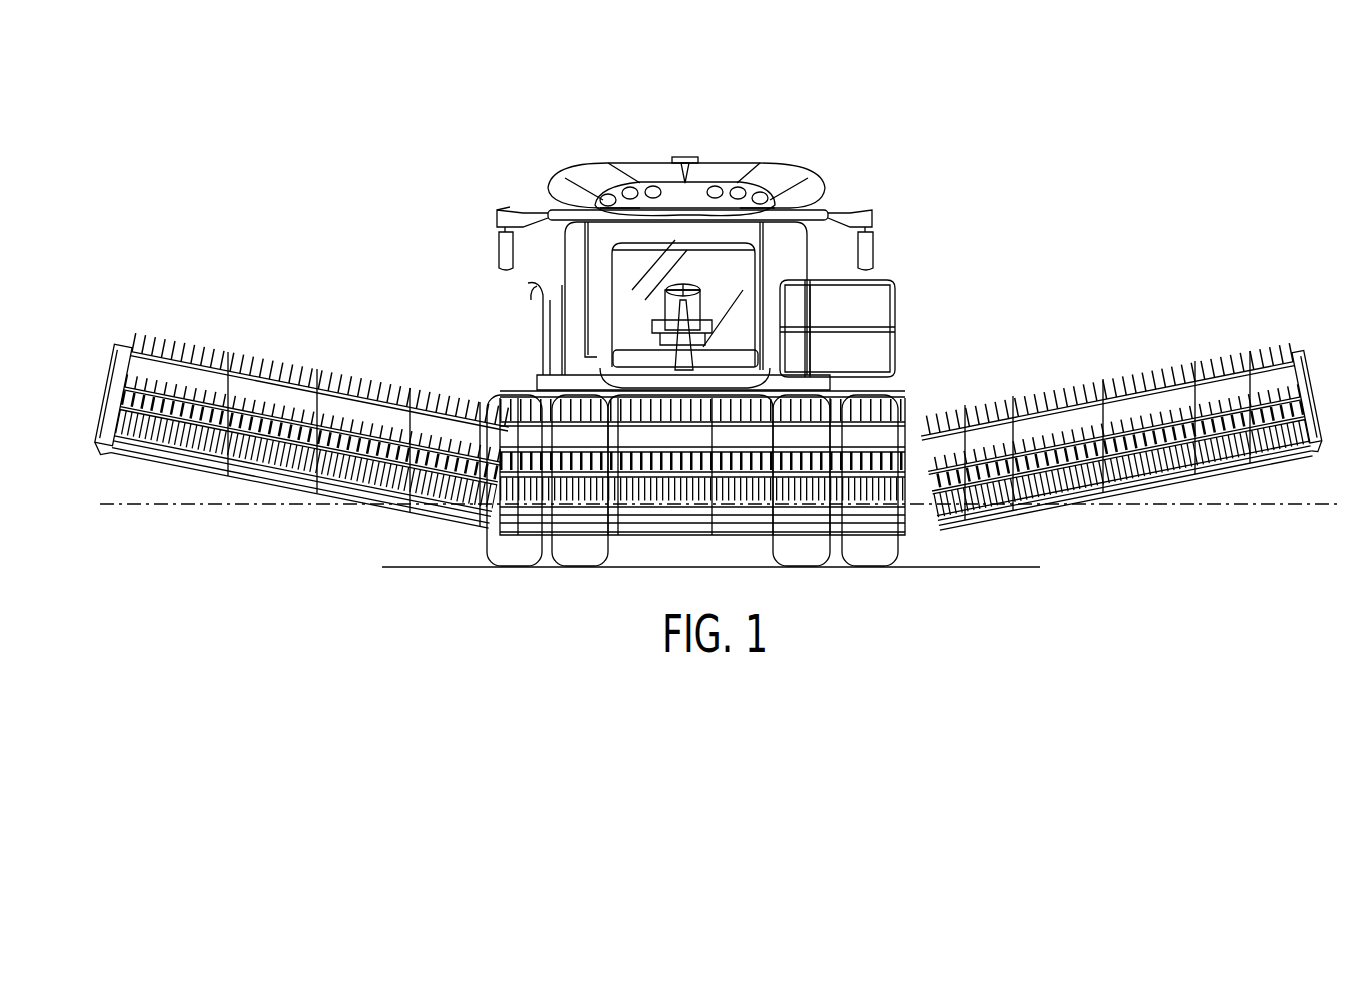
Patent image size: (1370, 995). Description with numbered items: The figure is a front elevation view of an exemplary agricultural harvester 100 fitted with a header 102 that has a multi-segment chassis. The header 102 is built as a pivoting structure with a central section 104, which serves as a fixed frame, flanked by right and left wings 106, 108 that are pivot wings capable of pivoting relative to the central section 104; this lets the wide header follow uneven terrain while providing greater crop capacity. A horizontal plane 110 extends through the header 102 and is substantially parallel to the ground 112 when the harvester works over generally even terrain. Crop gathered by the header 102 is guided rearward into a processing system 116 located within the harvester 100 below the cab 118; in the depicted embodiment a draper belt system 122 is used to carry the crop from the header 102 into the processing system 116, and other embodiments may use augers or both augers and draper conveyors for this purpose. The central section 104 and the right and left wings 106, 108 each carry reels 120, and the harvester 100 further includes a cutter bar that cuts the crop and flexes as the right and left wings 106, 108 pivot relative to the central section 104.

The harvester 100 is at (1040, 78).
The header 102 is at (995, 370).
The central section 104 is at (826, 378).
The right wing 106 is at (332, 292).
The left wing 108 is at (1184, 284).
The horizontal plane 110 is at (1288, 500).
The ground 112 is at (1000, 567).
The processing system 116 is at (540, 388).
The cab 118 is at (568, 247).
The reels 120 is at (270, 360).
The draper belt system 122 is at (405, 392).